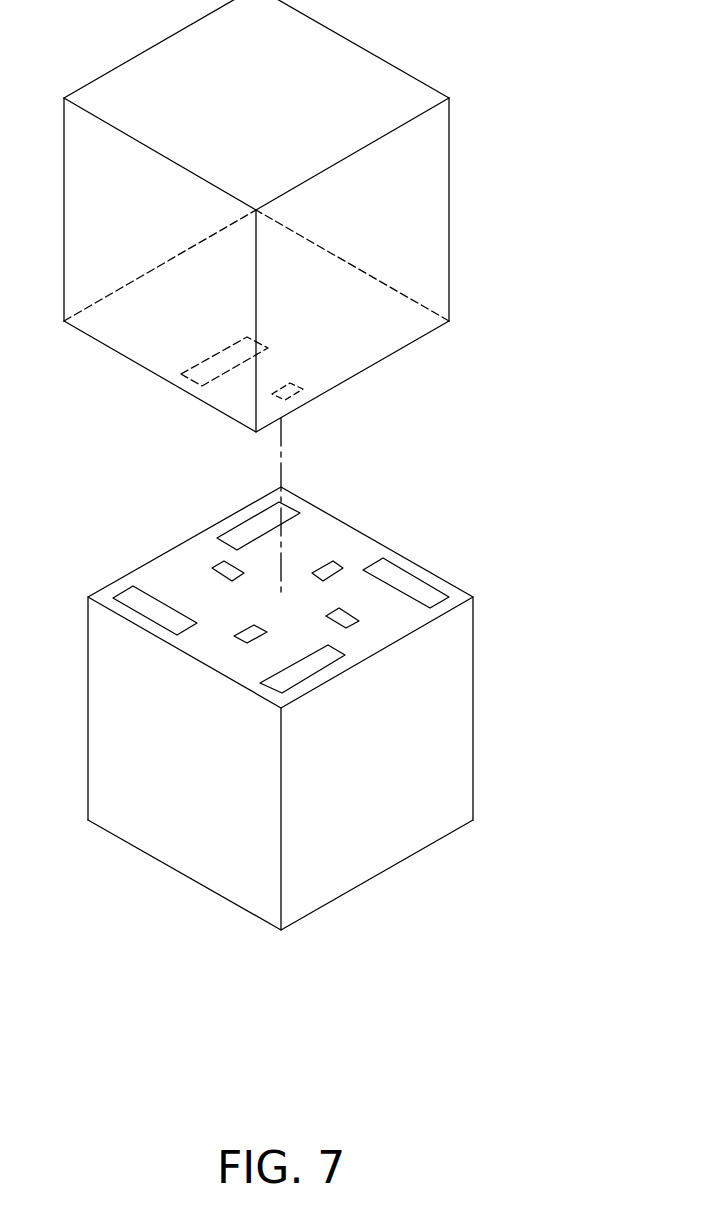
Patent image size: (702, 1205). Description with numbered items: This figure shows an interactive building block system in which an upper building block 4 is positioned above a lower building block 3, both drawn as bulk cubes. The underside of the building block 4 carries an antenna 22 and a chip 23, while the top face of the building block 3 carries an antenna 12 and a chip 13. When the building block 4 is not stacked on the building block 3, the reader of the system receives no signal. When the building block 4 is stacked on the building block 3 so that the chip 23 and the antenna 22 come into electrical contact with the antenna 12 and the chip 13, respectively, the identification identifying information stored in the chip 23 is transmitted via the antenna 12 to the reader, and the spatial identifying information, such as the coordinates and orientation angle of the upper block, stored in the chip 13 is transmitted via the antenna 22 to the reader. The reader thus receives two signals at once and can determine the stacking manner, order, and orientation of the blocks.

The building block 3 is at (478, 572).
The building block 4 is at (434, 62).
The antenna 12 is at (362, 606).
The chip 13 is at (322, 561).
The antenna 22 is at (193, 378).
The chip 23 is at (274, 397).